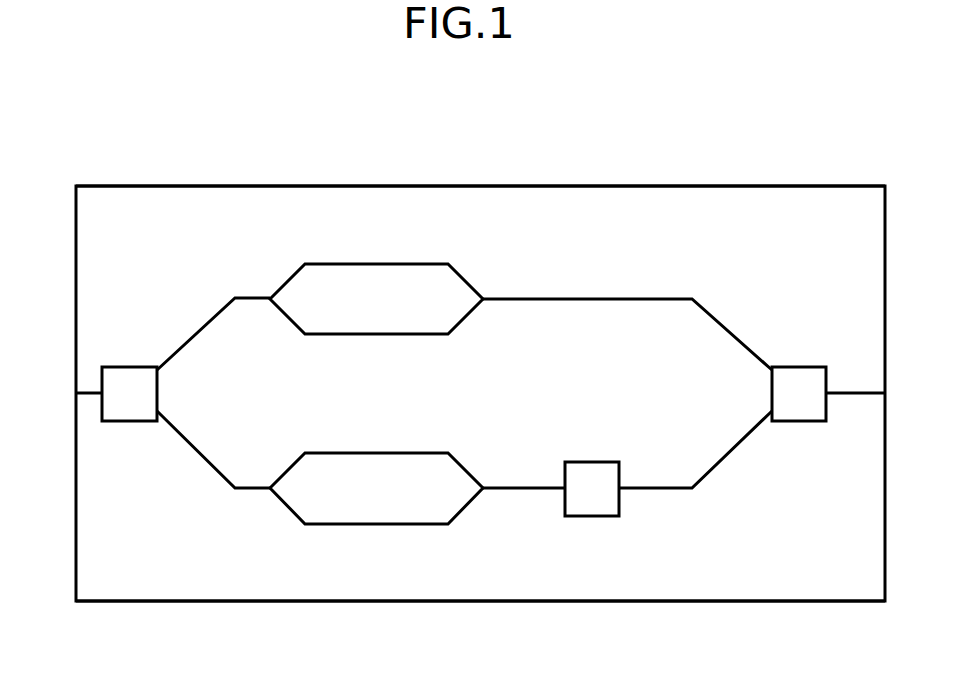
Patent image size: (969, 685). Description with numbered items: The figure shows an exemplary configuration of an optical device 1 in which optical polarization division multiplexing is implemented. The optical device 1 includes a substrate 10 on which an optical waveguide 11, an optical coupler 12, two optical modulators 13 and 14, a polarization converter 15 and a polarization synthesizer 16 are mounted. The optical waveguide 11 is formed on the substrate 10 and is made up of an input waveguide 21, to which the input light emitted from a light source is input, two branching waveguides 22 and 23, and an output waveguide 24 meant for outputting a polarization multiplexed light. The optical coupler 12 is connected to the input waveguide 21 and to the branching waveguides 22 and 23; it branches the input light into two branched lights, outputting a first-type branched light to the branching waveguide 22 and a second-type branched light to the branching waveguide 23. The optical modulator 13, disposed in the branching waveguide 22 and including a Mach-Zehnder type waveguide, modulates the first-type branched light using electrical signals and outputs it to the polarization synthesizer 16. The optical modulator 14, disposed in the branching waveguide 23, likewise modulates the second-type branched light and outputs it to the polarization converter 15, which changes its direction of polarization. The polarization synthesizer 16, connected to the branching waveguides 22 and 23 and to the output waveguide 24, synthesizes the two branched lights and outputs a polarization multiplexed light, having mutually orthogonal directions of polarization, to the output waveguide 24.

The optical device 1 is at (678, 133).
The substrate 10 is at (832, 185).
The optical waveguide 11 is at (205, 531).
The optical coupler 12 is at (128, 367).
The optical modulator 13 is at (393, 263).
The optical modulator 14 is at (393, 453).
The polarization converter 15 is at (596, 462).
The polarization synthesizer 16 is at (797, 367).
The input waveguide 21 is at (92, 395).
The branching waveguide 22 is at (540, 298).
The branching waveguide 23 is at (540, 490).
The output waveguide 24 is at (858, 395).